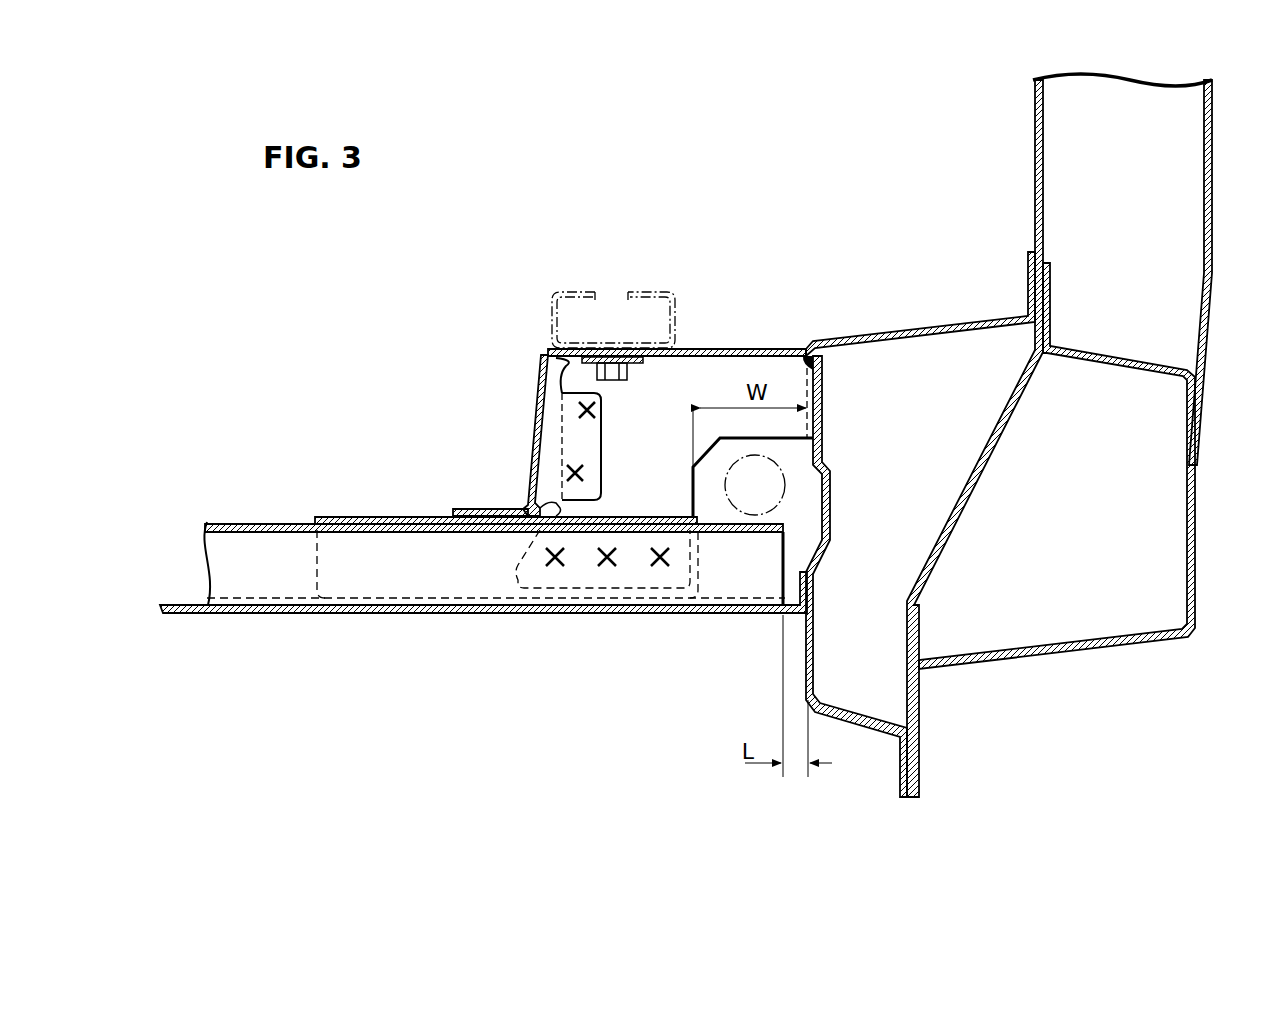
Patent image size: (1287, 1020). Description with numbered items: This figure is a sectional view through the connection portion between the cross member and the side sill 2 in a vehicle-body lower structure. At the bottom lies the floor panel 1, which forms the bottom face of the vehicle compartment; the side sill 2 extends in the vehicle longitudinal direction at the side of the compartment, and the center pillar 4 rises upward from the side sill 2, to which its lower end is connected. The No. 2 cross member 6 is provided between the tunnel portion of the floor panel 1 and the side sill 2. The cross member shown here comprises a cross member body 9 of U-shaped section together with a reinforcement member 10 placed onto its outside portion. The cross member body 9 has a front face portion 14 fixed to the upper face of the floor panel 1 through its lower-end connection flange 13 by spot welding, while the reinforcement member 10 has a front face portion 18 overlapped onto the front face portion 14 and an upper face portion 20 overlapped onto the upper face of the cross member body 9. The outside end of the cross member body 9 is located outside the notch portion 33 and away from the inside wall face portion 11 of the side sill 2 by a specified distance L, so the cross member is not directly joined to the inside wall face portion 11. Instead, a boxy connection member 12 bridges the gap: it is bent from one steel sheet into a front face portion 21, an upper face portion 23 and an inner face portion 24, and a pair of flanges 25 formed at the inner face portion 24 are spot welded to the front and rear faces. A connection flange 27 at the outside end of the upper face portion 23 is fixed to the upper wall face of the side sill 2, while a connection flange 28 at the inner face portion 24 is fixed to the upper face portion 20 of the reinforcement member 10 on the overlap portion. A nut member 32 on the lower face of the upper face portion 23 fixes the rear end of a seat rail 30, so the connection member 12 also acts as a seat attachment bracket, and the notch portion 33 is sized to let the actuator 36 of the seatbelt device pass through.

The floor panel 1 is at (182, 603).
The side sill 2 is at (1206, 531).
The center pillar 4 is at (1030, 148).
The No. 2 cross member 6 is at (355, 494).
The cross member body 9 is at (228, 519).
The reinforcement member 10 is at (430, 509).
The inside wall face portion 11 is at (805, 660).
The connection member 12 is at (791, 524).
The lower-end connection flange 13 is at (268, 600).
The front face portion 14 is at (218, 550).
The front face portion 18 is at (355, 605).
The upper face portion 20 is at (625, 517).
The front face portion 21 is at (700, 362).
The upper face portion 23 is at (813, 348).
The inner face portion 24 is at (537, 405).
The flange 25 is at (601, 432).
The connection flange 27 is at (870, 329).
The connection flange 28 is at (497, 508).
The seat rail 30 is at (575, 292).
The nut member 32 is at (587, 373).
The notch portion 33 is at (795, 438).
The actuator 36 is at (778, 490).